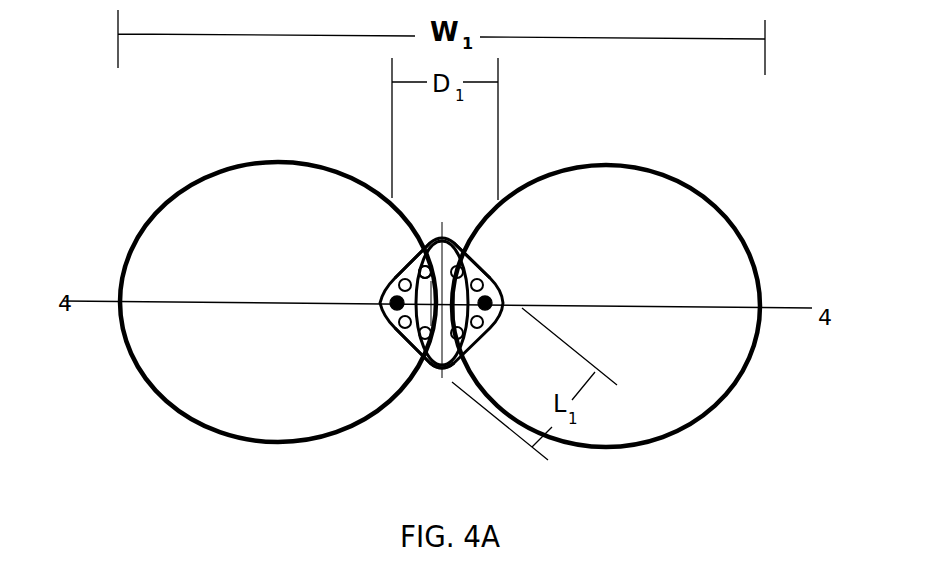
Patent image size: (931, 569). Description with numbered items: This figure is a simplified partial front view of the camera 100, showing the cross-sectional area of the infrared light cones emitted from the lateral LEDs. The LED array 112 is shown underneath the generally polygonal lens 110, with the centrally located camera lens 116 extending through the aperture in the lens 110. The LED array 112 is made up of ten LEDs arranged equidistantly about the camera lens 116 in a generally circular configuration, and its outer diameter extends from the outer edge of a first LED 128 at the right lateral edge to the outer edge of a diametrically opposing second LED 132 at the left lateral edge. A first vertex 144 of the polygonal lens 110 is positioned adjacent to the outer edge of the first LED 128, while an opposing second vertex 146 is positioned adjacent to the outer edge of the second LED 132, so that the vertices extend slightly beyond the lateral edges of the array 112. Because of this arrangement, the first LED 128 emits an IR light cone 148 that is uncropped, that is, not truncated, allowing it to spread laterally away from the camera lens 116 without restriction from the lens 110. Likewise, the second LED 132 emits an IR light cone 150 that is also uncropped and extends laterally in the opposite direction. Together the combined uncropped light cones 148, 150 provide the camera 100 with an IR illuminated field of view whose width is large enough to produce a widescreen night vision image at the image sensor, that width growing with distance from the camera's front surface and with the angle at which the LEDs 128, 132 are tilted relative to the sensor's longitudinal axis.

The camera 100 is at (333, 475).
The generally polygonal lens 110 is at (455, 242).
The LED array 112 is at (428, 243).
The camera lens 116 is at (430, 372).
The first LED 128 is at (495, 278).
The second LED 132 is at (394, 332).
The first vertex 144 is at (500, 285).
The second vertex 146 is at (385, 282).
The IR light cone 148 is at (720, 210).
The IR light cone 150 is at (158, 202).